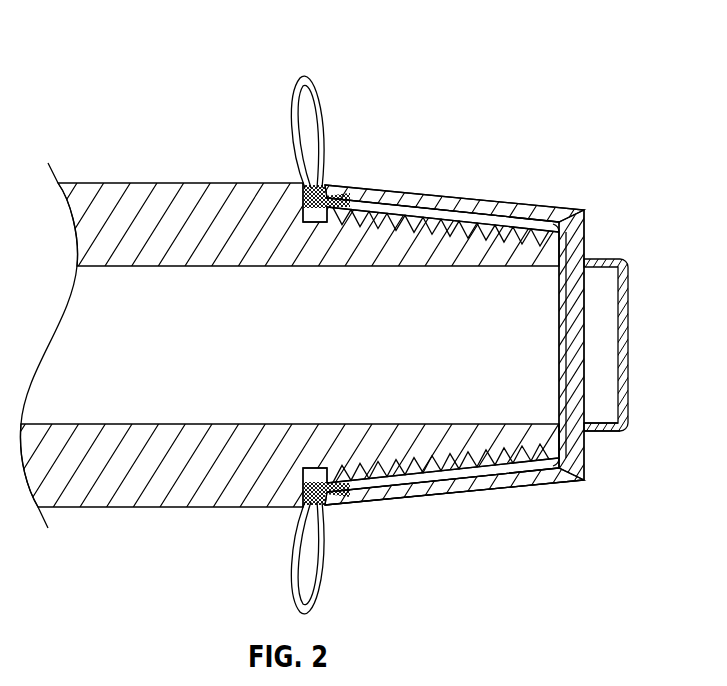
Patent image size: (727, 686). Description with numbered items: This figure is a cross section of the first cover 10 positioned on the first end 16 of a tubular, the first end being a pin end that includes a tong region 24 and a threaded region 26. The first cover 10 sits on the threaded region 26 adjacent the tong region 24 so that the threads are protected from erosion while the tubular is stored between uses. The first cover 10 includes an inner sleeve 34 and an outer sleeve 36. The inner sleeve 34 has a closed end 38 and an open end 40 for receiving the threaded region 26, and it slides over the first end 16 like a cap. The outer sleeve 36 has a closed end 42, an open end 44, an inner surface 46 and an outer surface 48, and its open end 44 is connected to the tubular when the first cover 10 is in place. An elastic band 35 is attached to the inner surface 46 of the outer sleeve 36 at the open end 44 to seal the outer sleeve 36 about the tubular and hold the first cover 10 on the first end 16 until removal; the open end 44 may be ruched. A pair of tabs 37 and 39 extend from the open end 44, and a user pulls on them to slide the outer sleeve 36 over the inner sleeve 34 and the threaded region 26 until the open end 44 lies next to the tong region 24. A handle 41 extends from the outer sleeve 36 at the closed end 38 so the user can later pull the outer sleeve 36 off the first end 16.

The first cover 10 is at (566, 212).
The first end 16 is at (585, 243).
The tong region 24 is at (133, 183).
The threaded region 26 is at (552, 450).
The inner sleeve 34 is at (376, 198).
The elastic band 35 is at (335, 466).
The outer sleeve 36 is at (440, 193).
The tab 37 is at (311, 78).
The closed end 38 is at (562, 307).
The tab 39 is at (326, 555).
The open end 40 is at (292, 190).
The handle 41 is at (630, 371).
The closed end 42 is at (600, 423).
The open end 44 is at (328, 505).
The inner surface 46 is at (418, 484).
The outer surface 48 is at (508, 488).